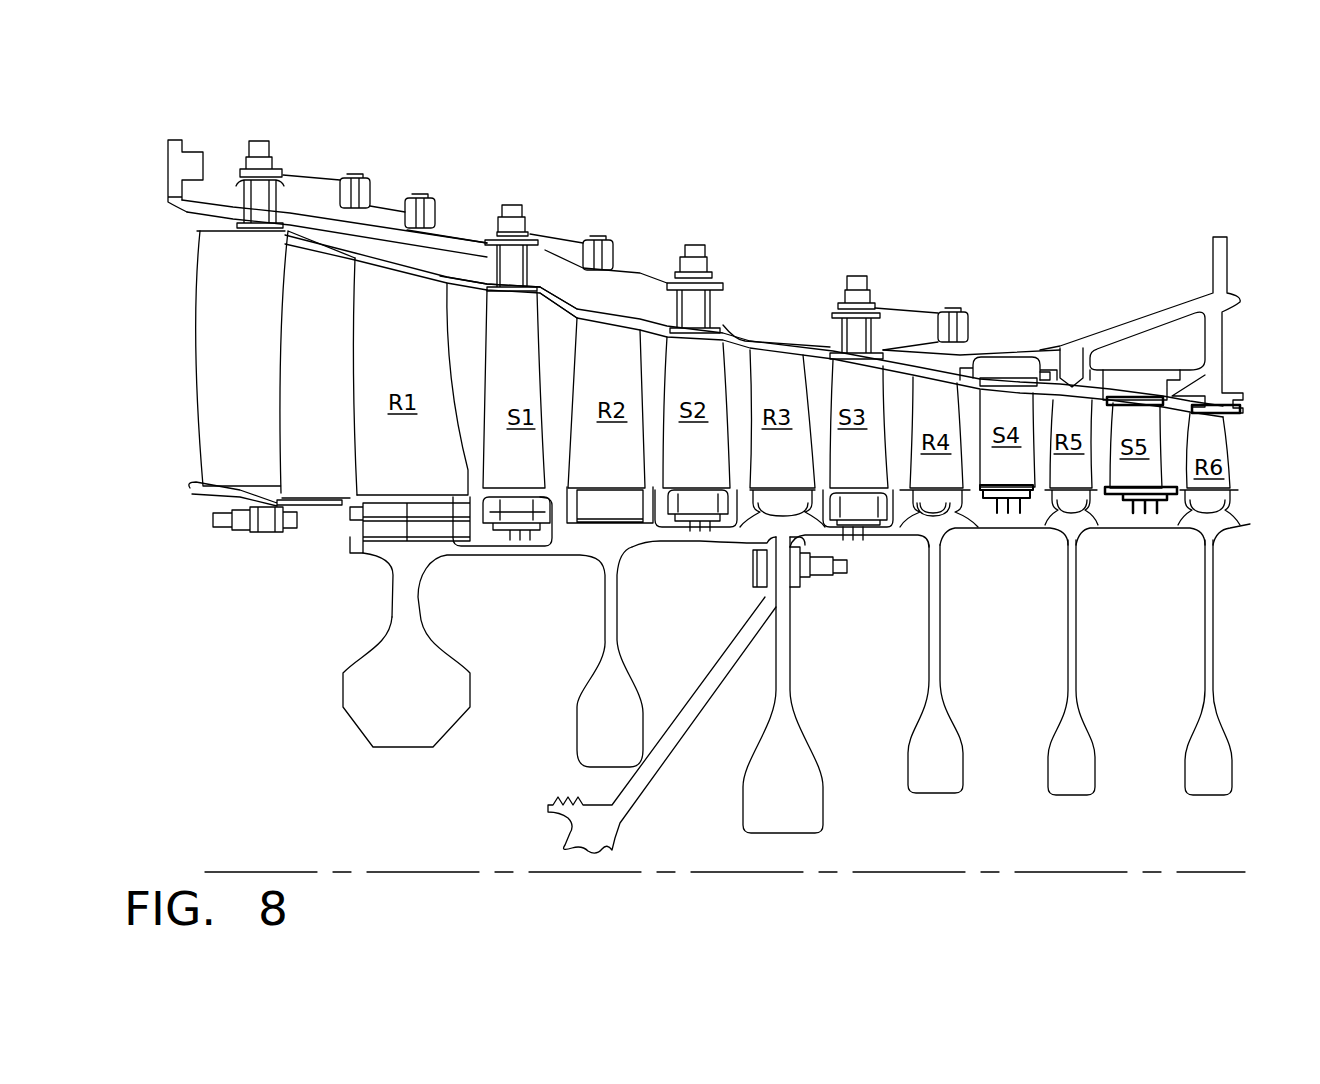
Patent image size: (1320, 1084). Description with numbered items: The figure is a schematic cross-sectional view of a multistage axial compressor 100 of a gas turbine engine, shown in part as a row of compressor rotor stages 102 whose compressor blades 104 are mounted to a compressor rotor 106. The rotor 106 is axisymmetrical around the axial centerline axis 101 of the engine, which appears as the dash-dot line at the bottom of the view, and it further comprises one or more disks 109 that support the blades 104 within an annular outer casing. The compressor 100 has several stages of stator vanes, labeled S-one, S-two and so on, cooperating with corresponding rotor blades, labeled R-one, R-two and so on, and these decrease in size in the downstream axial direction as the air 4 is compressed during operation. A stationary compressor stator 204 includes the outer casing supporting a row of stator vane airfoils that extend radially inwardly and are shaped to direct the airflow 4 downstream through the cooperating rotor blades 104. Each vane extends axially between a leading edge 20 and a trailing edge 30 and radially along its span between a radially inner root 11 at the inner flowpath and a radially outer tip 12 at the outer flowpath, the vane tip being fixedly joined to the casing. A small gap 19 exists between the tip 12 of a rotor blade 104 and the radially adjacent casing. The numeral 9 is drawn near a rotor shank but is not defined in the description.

The multistage axial compressor 100 is at (240, 118).
The air 4 is at (156, 343).
The tip 12 is at (433, 282).
The gap 19 is at (472, 297).
The leading edge 20 is at (360, 394).
The trailing edge 30 is at (457, 350).
The compressor stator 204 is at (550, 312).
The compressor blades 104 is at (365, 447).
The root 11 is at (400, 496).
The compressor rotor stages 102 is at (306, 581).
The compressor rotor 106 is at (385, 560).
The disks 109 is at (457, 690).
The blade dovetail slot 9 is at (947, 507).
The axial centerline axis 101 is at (1200, 871).